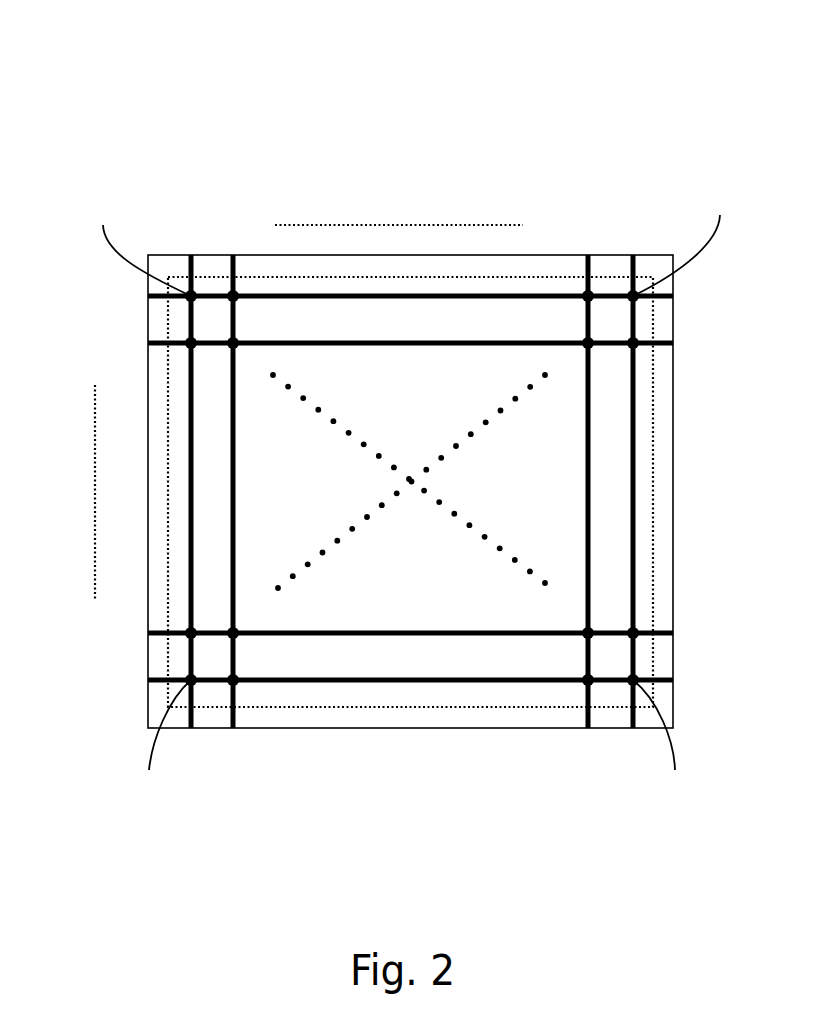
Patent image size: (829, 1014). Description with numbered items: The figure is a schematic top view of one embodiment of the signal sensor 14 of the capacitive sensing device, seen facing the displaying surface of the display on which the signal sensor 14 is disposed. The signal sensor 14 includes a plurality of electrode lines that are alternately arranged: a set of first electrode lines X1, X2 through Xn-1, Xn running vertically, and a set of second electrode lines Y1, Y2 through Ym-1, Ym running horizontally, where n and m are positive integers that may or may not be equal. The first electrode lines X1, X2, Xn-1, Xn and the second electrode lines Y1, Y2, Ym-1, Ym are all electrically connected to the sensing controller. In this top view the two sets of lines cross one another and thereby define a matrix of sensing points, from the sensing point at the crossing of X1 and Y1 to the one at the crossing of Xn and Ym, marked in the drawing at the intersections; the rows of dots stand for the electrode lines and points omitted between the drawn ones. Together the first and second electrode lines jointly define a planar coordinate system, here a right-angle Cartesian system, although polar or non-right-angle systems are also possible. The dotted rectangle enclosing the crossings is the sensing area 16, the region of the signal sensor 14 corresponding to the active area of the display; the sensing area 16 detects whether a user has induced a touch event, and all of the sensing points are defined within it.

The signal sensor 14 is at (408, 412).
The sensing area 16 is at (653, 485).
The first electrode line X1 is at (184, 467).
The first electrode line X2 is at (240, 467).
The first electrode line Xn-1 is at (576, 452).
The first electrode line Xn is at (619, 457).
The second electrode line Y1 is at (377, 688).
The second electrode line Y2 is at (377, 647).
The second electrode line Ym-1 is at (366, 342).
The second electrode line Ym is at (376, 287).